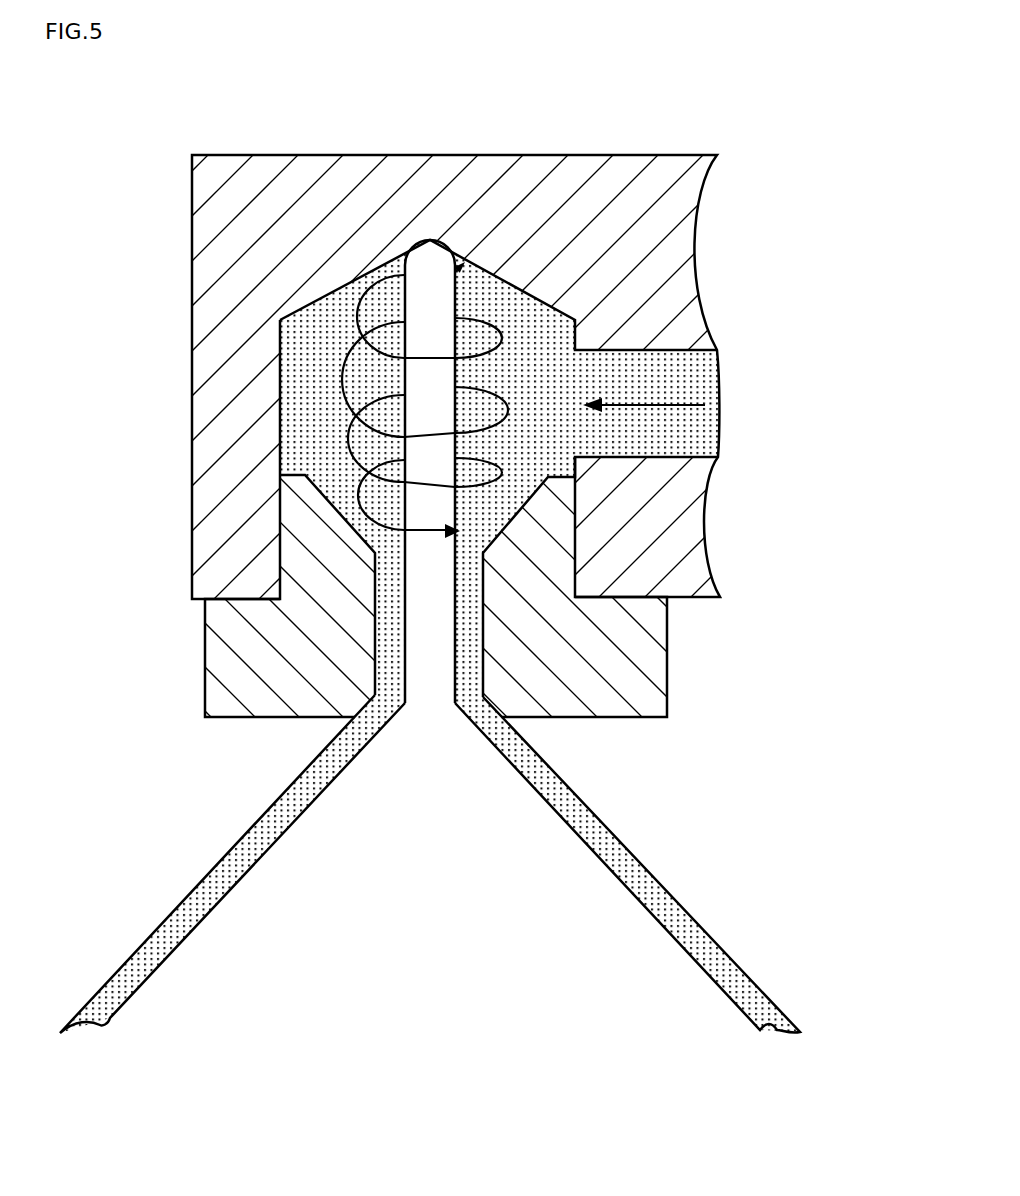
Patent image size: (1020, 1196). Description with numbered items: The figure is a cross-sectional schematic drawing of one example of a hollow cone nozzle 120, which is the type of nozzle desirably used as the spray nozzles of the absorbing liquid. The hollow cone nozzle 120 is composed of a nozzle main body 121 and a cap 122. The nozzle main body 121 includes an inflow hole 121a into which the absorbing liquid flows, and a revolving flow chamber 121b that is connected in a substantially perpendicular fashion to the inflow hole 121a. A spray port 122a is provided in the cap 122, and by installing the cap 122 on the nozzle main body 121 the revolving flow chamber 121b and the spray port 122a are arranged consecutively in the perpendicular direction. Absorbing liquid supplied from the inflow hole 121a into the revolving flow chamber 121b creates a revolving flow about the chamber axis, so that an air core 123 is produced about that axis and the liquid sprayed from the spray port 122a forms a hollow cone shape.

The hollow cone nozzle 120 is at (90, 89).
The nozzle main body 121 is at (208, 277).
The inflow hole 121a is at (673, 350).
The revolving flow chamber 121b is at (517, 460).
The cap 122 is at (222, 650).
The spray port 122a is at (500, 771).
The air core 123 is at (430, 300).